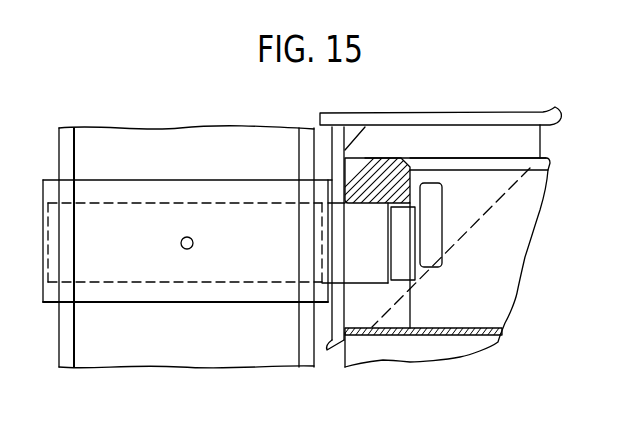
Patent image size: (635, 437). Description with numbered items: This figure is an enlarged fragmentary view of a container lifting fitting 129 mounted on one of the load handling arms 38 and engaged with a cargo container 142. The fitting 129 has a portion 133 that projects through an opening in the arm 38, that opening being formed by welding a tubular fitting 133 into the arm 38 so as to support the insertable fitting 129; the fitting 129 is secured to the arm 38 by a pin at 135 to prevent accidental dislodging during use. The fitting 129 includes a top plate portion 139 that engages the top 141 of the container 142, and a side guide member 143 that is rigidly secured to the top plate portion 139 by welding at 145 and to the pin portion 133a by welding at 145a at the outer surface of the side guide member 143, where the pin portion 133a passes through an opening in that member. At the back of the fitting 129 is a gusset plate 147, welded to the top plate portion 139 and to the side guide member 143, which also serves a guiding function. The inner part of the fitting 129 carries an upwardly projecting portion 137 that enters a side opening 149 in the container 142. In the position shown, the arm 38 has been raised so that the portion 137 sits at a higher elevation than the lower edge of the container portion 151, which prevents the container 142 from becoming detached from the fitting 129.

The arm 38 is at (132, 143).
The fitting 129 is at (450, 106).
The tubular fitting 133 is at (43, 298).
The pin portion 133a is at (350, 285).
The pin 135 is at (193, 244).
The upwardly projecting portion 137 is at (430, 238).
The top plate portion 139 is at (402, 113).
The top of the container 141 is at (470, 160).
The container 142 is at (520, 228).
The side guide member 143 is at (332, 140).
The weld 145 is at (349, 133).
The weld 145a is at (322, 206).
The gusset plate 147 is at (518, 133).
The side opening 149 is at (363, 313).
The portion of the container 151 is at (410, 184).